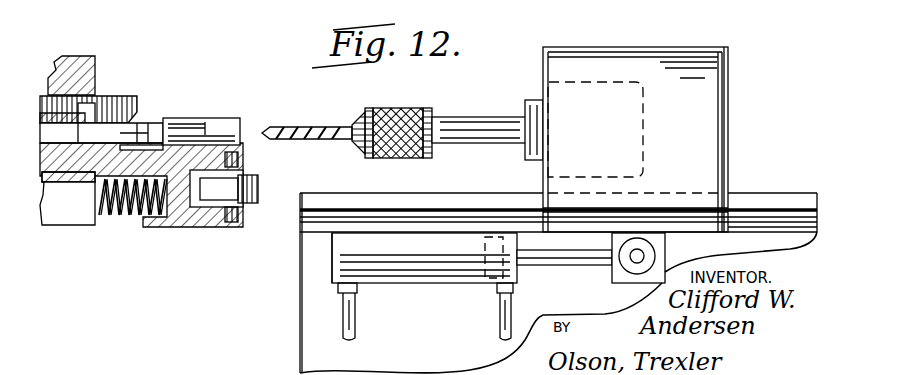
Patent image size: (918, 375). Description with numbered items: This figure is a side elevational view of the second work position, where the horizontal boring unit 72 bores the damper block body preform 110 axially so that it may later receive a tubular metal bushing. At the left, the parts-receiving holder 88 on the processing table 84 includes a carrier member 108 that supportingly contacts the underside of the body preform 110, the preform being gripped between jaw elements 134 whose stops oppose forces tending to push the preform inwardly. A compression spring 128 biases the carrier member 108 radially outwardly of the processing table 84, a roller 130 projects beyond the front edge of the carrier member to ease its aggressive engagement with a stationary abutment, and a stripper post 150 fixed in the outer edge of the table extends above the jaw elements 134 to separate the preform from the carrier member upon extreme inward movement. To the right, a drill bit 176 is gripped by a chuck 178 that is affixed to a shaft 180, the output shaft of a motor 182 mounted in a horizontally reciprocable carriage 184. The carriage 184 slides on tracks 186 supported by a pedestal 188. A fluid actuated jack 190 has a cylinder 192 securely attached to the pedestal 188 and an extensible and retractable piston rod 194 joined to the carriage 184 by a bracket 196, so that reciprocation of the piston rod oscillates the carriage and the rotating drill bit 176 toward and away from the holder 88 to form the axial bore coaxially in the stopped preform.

The horizontal boring unit 72 is at (502, 79).
The processing table 84 is at (82, 214).
The parts-receiving holder 88 is at (172, 263).
The carrier member 108 is at (143, 232).
The damper block body preform 110 is at (212, 117).
The compression spring 128 is at (118, 215).
The roller 130 is at (258, 210).
The jaw elements 134 is at (150, 118).
The stripper post 150 is at (108, 98).
The drill bit 176 is at (283, 132).
The chuck 178 is at (395, 110).
The shaft 180 is at (453, 128).
The motor 182 is at (605, 88).
The carriage 184 is at (720, 108).
The tracks 186 is at (350, 197).
The pedestal 188 is at (300, 320).
The fluid actuated jack 190 is at (423, 275).
The cylinder 192 is at (332, 272).
The piston rod 194 is at (578, 262).
The bracket 196 is at (657, 238).